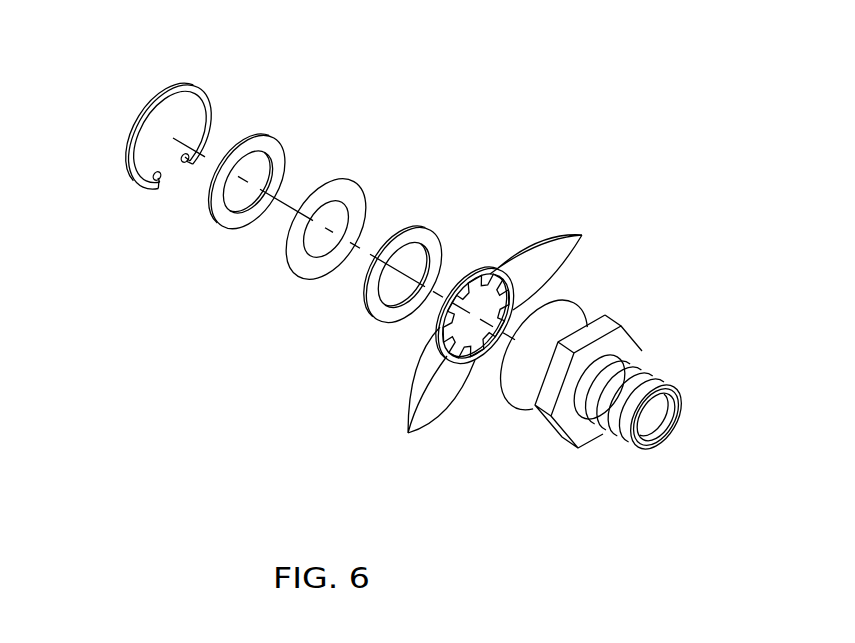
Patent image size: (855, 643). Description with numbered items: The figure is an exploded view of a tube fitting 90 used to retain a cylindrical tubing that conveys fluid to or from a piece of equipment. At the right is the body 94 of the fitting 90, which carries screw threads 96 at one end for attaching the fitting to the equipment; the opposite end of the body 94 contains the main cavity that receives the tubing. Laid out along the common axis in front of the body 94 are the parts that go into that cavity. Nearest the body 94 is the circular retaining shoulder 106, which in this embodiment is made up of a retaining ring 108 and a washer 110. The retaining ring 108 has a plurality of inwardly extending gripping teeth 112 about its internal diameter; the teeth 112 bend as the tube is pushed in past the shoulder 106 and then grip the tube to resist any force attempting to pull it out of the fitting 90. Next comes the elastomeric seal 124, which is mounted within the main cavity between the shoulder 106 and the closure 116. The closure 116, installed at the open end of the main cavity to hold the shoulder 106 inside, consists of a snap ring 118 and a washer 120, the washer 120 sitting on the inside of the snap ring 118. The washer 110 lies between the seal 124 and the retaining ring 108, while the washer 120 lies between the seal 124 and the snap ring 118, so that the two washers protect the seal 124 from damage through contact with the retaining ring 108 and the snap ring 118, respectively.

The fitting 90 is at (337, 551).
The body 94 is at (566, 448).
The screw threads 96 is at (660, 370).
The retaining shoulder 106 is at (423, 230).
The retaining ring 108 is at (486, 355).
The washer 110 is at (388, 323).
The gripping teeth 112 is at (583, 235).
The closure 116 is at (267, 137).
The snap ring 118 is at (144, 188).
The washer 120 is at (232, 230).
The elastomeric seal 124 is at (310, 283).